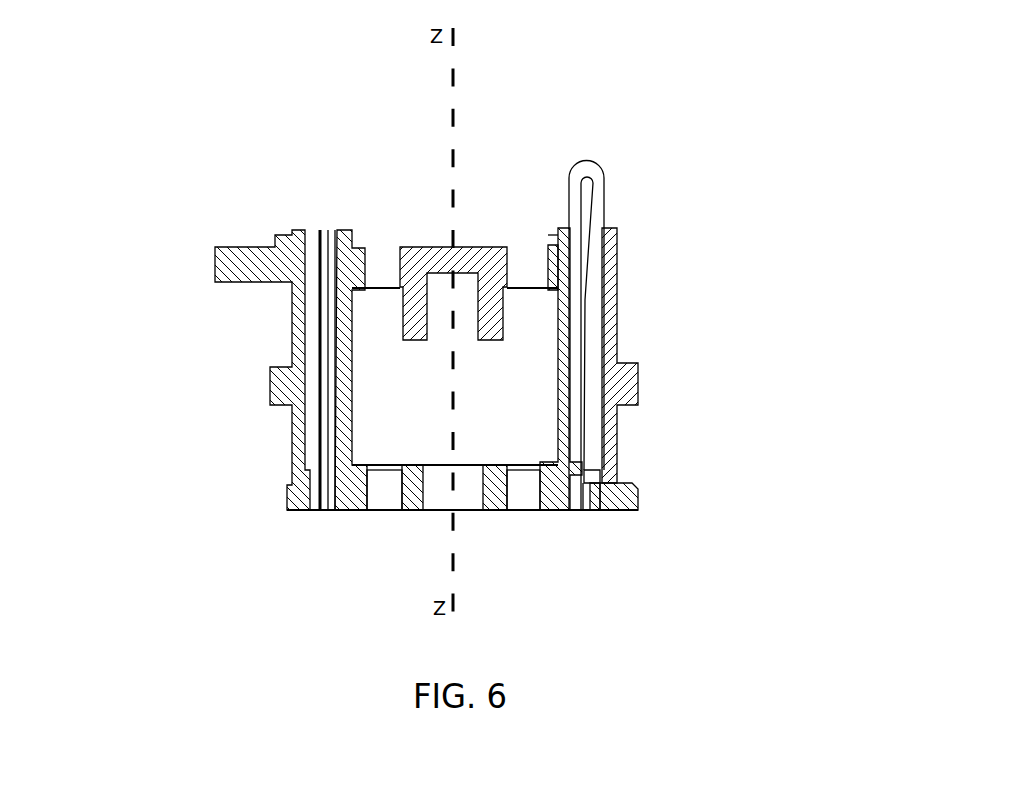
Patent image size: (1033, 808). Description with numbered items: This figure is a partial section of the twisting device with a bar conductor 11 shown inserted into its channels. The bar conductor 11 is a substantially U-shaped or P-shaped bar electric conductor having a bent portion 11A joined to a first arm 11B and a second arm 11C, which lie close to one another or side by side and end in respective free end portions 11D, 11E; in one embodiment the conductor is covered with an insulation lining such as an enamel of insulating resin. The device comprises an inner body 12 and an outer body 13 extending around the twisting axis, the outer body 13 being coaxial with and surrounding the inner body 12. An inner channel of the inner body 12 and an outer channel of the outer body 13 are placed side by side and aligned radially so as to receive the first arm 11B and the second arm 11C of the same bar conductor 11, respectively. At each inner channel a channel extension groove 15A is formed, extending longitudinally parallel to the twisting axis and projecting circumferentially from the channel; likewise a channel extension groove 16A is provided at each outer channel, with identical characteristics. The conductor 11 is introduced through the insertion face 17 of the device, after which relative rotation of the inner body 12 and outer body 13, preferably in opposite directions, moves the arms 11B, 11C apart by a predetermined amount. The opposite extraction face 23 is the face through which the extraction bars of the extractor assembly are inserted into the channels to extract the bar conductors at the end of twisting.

The bar conductor 11 is at (703, 305).
The bent portion 11A is at (597, 162).
The first arm 11B is at (580, 257).
The second arm 11C is at (593, 282).
The free end portion 11D is at (577, 510).
The free end portion 11E is at (596, 476).
The inner body 12 is at (558, 510).
The outer body 13 is at (627, 380).
The channel extension groove 15A is at (335, 510).
The channel extension groove 16A is at (592, 512).
The insertion face 17 is at (294, 228).
The extraction face 23 is at (350, 510).